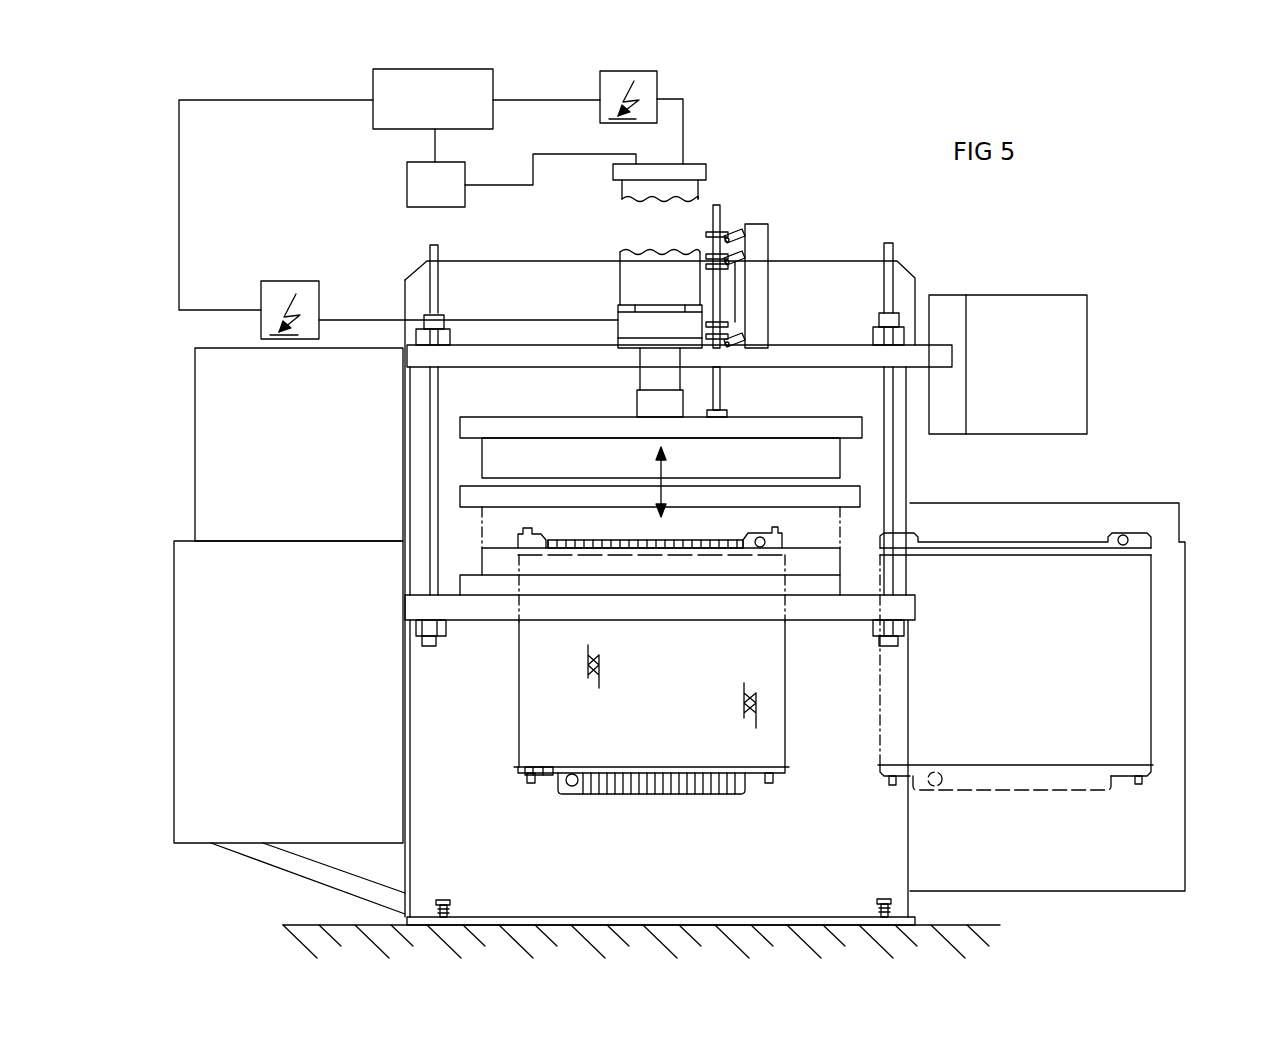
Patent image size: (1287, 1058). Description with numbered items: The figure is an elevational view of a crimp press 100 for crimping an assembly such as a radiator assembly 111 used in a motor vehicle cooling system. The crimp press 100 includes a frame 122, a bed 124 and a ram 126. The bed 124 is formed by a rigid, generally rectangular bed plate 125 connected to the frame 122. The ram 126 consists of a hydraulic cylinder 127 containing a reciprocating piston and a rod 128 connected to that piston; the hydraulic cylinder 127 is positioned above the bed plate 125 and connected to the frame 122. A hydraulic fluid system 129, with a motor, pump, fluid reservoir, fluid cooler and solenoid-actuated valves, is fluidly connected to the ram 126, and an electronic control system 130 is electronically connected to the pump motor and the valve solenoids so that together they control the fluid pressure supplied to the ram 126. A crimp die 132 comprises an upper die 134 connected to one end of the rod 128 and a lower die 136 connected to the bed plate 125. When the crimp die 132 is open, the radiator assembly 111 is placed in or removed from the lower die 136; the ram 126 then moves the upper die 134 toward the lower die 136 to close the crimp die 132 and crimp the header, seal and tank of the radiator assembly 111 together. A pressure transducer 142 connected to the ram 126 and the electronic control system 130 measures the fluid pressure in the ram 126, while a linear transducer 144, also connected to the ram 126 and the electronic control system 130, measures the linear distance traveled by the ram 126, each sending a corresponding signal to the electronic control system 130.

The crimp press 100 is at (1040, 240).
The radiator assembly 111 is at (790, 743).
The frame 122 is at (845, 880).
The bed 124 is at (860, 587).
The bed plate 125 is at (847, 578).
The ram 126 is at (618, 295).
The hydraulic cylinder 127 is at (637, 268).
The rod 128 is at (650, 378).
The hydraulic fluid system 129 is at (407, 177).
The electronic control system 130 is at (373, 108).
The crimp die 132 is at (842, 463).
The upper die 134 is at (833, 447).
The lower die 136 is at (482, 558).
The pressure transducer 142 is at (275, 281).
The linear transducer 144 is at (600, 110).